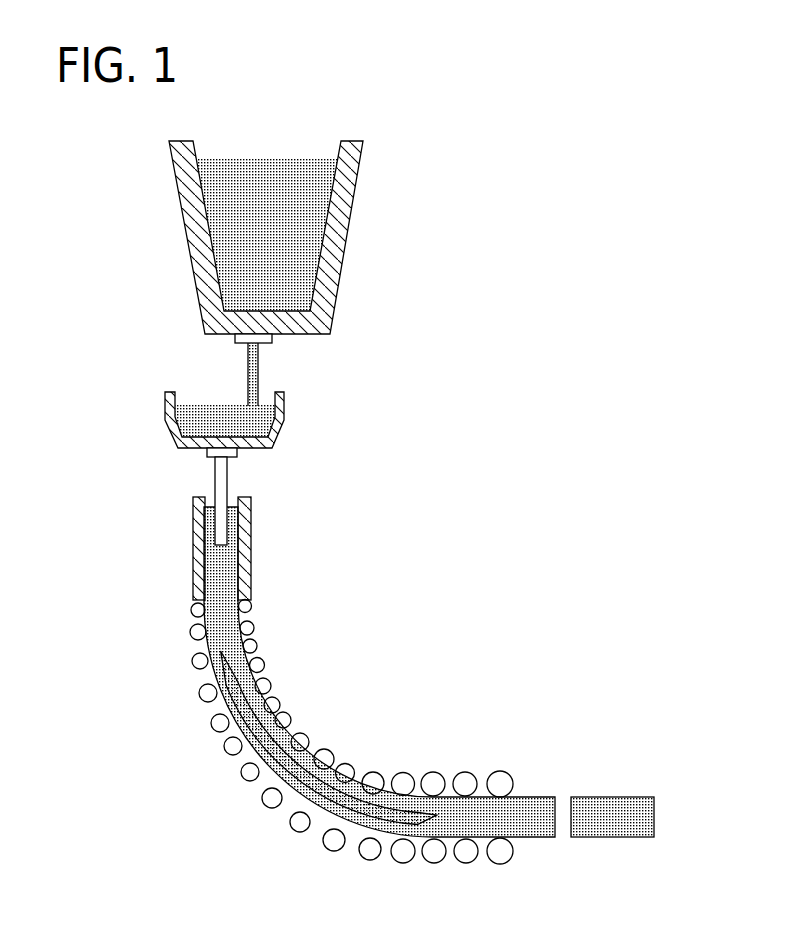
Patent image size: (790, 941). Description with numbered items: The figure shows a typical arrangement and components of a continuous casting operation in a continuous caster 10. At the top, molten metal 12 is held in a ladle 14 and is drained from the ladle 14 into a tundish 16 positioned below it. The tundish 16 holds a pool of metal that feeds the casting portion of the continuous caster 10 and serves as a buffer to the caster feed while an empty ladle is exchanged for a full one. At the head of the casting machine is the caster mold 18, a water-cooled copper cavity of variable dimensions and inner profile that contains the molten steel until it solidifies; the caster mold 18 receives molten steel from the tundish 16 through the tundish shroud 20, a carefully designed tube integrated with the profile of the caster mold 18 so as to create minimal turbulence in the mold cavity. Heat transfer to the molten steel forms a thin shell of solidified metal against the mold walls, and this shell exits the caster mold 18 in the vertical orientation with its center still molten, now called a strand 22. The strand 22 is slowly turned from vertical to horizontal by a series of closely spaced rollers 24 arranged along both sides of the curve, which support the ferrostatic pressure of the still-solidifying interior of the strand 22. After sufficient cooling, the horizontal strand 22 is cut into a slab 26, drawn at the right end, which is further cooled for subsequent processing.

The continuous caster 10 is at (402, 492).
The molten metal 12 is at (287, 178).
The ladle 14 is at (338, 278).
The tundish 16 is at (283, 403).
The caster mold 18 is at (252, 590).
The tundish shroud 20 is at (225, 480).
The strand 22 is at (222, 657).
The rollers 24 is at (372, 768).
The slab 26 is at (623, 826).